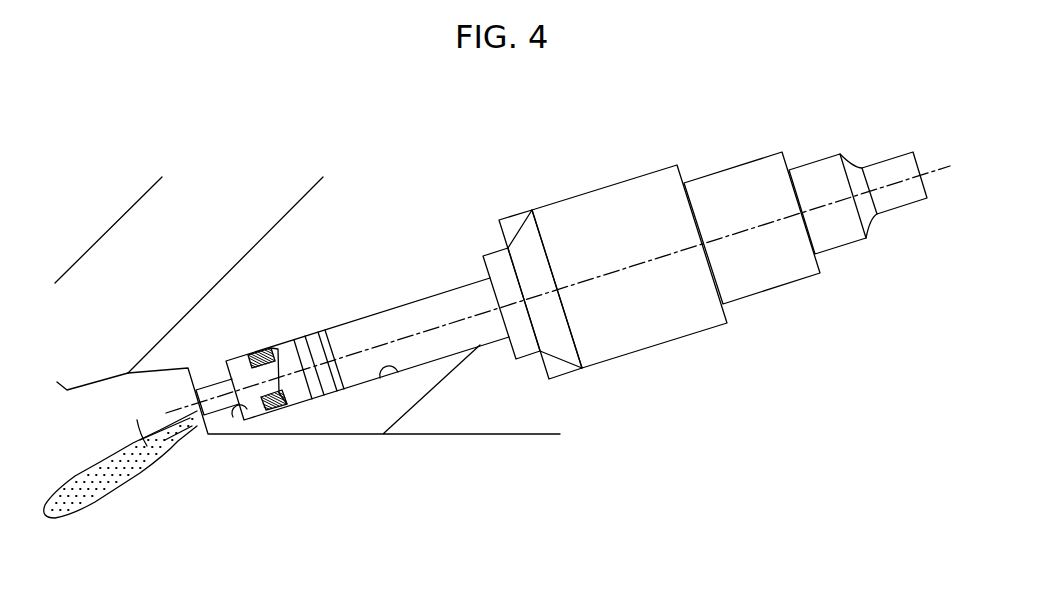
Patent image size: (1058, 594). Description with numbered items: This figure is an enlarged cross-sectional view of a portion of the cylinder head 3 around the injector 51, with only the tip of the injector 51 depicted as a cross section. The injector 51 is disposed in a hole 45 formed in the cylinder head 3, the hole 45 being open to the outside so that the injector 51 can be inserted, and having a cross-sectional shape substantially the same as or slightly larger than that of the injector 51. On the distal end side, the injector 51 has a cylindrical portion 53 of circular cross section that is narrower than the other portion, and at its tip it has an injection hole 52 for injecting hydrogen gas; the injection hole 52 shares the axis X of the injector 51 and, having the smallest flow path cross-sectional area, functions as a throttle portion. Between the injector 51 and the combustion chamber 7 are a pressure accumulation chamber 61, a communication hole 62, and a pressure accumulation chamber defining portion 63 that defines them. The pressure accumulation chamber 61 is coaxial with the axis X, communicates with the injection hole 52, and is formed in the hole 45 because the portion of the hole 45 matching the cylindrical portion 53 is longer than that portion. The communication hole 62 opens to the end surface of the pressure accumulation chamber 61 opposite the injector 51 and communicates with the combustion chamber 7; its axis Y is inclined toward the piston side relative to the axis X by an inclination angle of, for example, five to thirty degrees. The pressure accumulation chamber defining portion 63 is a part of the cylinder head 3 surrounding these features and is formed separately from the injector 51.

The cylinder head 3 is at (205, 205).
The combustion chamber 7 is at (112, 400).
The hole 45 is at (397, 373).
The injector 51 is at (697, 288).
The injection hole 52 is at (265, 410).
The cylindrical portion 53 is at (435, 343).
The pressure accumulation chamber 61 is at (236, 405).
The communication hole 62 is at (215, 386).
The pressure accumulation chamber defining portion 63 is at (293, 422).
The axis of the injector X is at (767, 228).
The axis of the communication hole Y is at (132, 457).